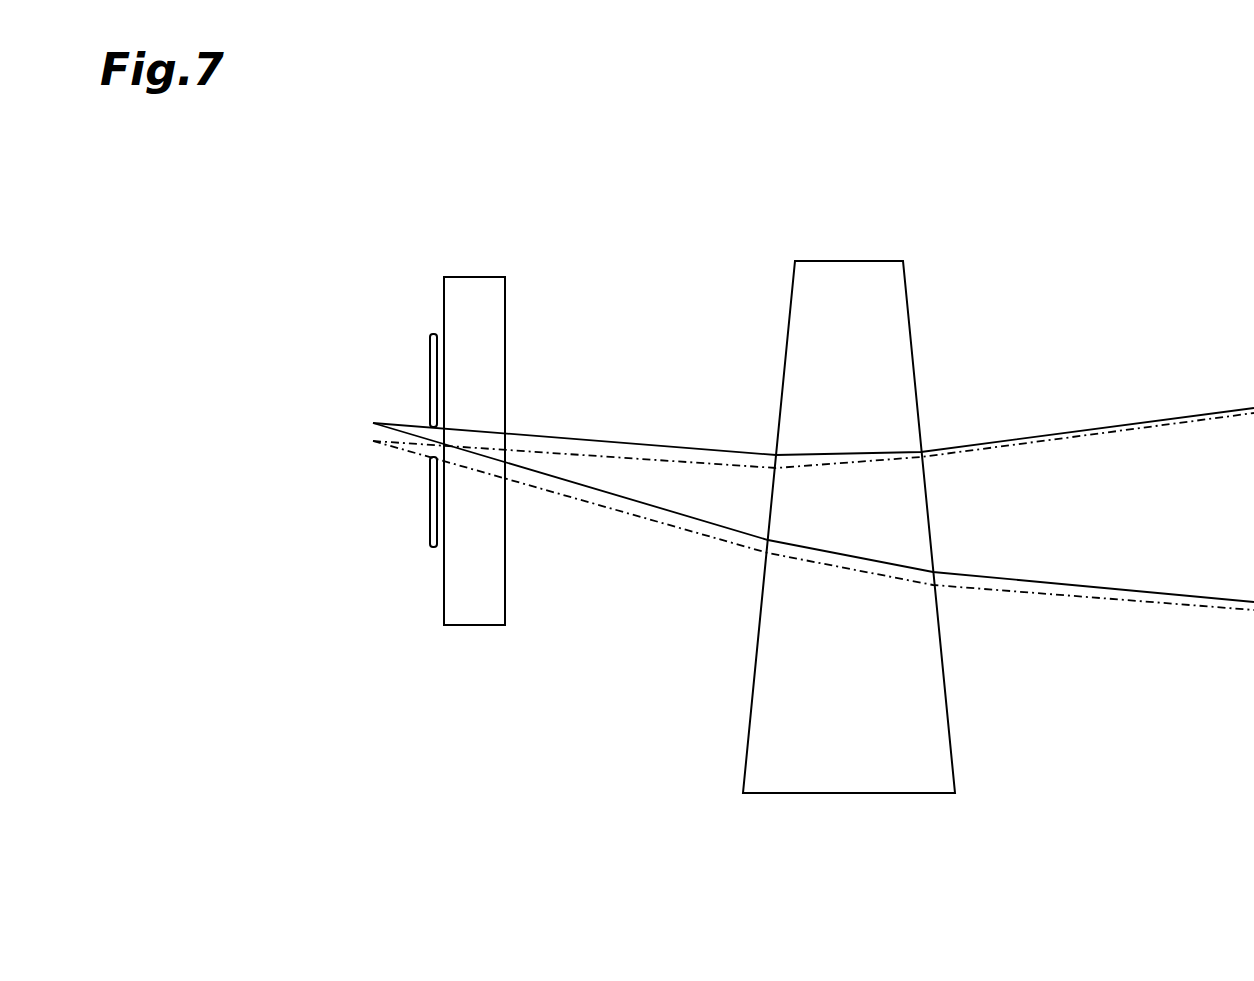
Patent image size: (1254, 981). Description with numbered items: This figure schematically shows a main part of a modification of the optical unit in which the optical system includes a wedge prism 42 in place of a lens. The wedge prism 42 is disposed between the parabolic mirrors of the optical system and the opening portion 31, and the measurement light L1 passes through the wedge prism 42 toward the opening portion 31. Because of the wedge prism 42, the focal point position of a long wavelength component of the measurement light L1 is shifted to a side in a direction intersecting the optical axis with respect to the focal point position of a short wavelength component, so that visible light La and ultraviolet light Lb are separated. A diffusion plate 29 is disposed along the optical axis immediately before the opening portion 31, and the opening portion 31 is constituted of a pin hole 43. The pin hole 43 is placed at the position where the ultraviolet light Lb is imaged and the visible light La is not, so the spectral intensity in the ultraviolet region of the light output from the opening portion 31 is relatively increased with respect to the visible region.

The diffusion plate 29 is at (478, 277).
The pin hole 43 is at (387, 398).
The opening portion 31 is at (433, 334).
The wedge prism 42 is at (847, 261).
The light having a wavelength in the ultraviolet region Lb is at (567, 434).
The light having a wavelength in the visible region La is at (650, 458).
The measurement light L1 is at (626, 532).